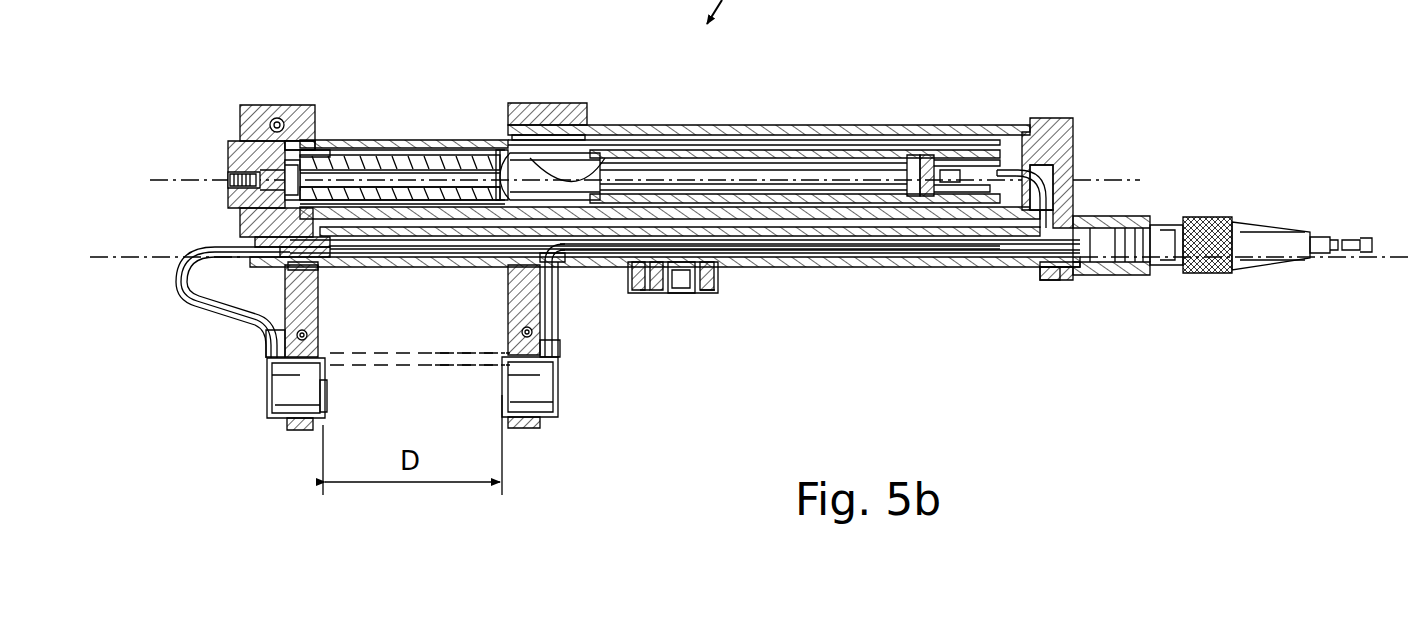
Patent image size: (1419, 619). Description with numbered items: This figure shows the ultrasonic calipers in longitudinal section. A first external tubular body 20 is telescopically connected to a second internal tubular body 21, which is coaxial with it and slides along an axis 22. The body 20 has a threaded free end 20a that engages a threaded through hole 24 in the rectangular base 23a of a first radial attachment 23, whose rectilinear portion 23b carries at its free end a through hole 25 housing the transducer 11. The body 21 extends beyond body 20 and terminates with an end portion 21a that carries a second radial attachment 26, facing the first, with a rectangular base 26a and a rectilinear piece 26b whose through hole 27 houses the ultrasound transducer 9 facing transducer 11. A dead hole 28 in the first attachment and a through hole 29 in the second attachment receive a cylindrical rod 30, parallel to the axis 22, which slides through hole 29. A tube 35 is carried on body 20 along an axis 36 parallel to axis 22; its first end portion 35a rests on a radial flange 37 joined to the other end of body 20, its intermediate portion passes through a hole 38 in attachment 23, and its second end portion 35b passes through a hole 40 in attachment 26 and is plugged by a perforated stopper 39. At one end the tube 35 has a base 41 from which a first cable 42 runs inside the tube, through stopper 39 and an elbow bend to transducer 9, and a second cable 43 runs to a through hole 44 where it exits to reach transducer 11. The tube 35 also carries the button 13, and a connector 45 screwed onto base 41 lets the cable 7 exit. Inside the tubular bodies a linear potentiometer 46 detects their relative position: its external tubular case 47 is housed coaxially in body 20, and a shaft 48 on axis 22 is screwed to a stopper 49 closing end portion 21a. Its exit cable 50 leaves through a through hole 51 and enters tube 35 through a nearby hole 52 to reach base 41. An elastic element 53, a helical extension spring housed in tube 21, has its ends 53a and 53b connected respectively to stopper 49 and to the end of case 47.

The cable 7 is at (1318, 238).
The ultrasound transducer 9 is at (275, 400).
The transducer 11 is at (548, 392).
The button 13 is at (680, 298).
The first external tubular body 20 is at (842, 123).
The first threaded free end 20a is at (565, 122).
The second internal tubular body 21 is at (440, 130).
The end portion 21a is at (305, 108).
The axis 22 is at (1135, 175).
The first radial attachment 23 is at (562, 345).
The rectangular base portion 23a is at (548, 118).
The rectilinear portion 23b is at (508, 320).
The threaded through hole 24 is at (605, 158).
The through hole 25 is at (550, 428).
The second radial attachment 26 is at (270, 330).
The rectangular base portion 26a is at (277, 105).
The rectilinear piece 26b is at (320, 318).
The through hole 27 is at (304, 428).
The dead hole 28 is at (502, 365).
The through hole 29 is at (322, 405).
The cylindrical rod 30 is at (408, 368).
The tube 35 is at (430, 268).
The first end portion 35a is at (1045, 280).
The second end portion 35b is at (292, 282).
The axis 36 is at (1352, 256).
The radial flange 37 is at (1038, 275).
The hole 38 is at (487, 268).
The perforated stopper 39 is at (240, 223).
The hole 40 is at (270, 262).
The base 41 is at (1135, 215).
The first cable 42 is at (205, 318).
The second cable 43 is at (556, 315).
The through hole 44 is at (562, 268).
The connector 45 is at (1252, 220).
The linear potentiometer 46 is at (660, 126).
The external tubular case 47 is at (720, 158).
The shaft 48 is at (408, 150).
The stopper 49 is at (252, 165).
The exit cable 50 is at (1045, 118).
The through hole 51 is at (1068, 190).
The hole 52 is at (1012, 265).
The elastic element 53 is at (378, 140).
The spring end portion 53a is at (323, 112).
The spring end portion 53b is at (492, 138).